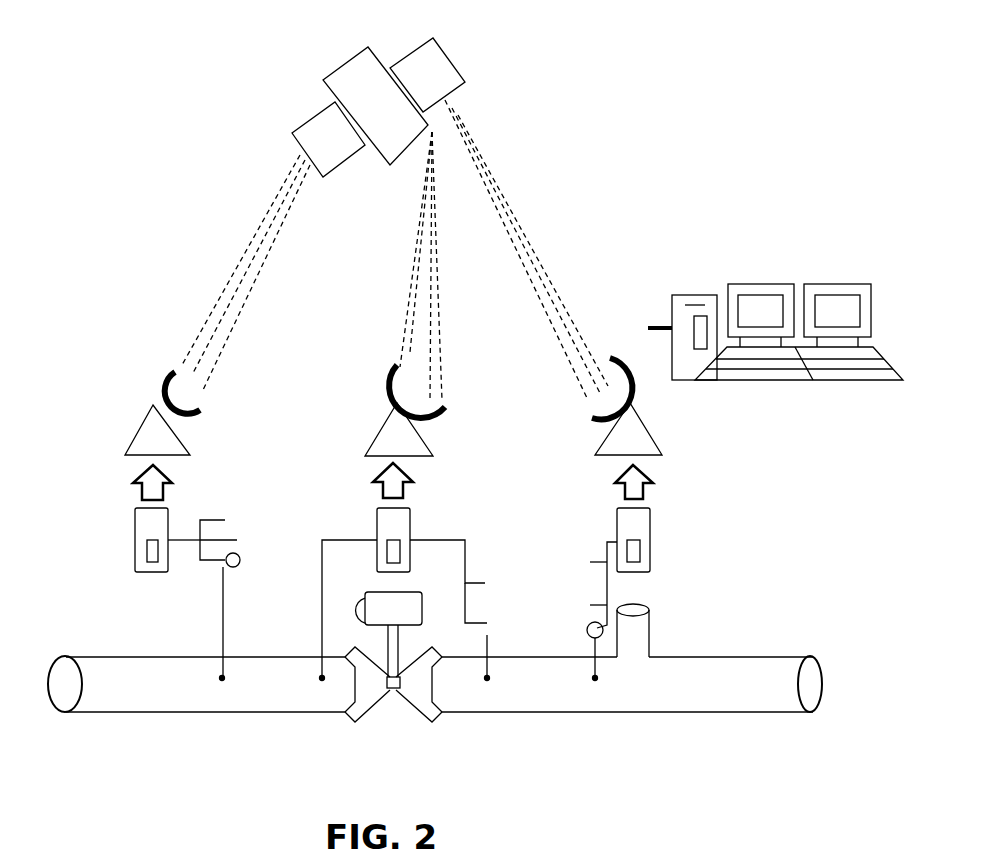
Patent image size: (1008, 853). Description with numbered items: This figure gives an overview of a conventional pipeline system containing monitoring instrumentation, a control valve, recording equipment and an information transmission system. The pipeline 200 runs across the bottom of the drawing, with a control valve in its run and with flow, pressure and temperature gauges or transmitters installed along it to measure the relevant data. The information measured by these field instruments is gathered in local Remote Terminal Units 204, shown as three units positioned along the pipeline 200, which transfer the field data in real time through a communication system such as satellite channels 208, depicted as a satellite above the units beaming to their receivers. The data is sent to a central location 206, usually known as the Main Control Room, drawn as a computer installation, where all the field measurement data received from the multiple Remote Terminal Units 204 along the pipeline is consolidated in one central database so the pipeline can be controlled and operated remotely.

The pipeline 200 is at (190, 712).
The Remote Terminal Unit 204 is at (135, 552).
The central location / Main Control Room 206 is at (772, 284).
The satellite channel 208 is at (465, 70).